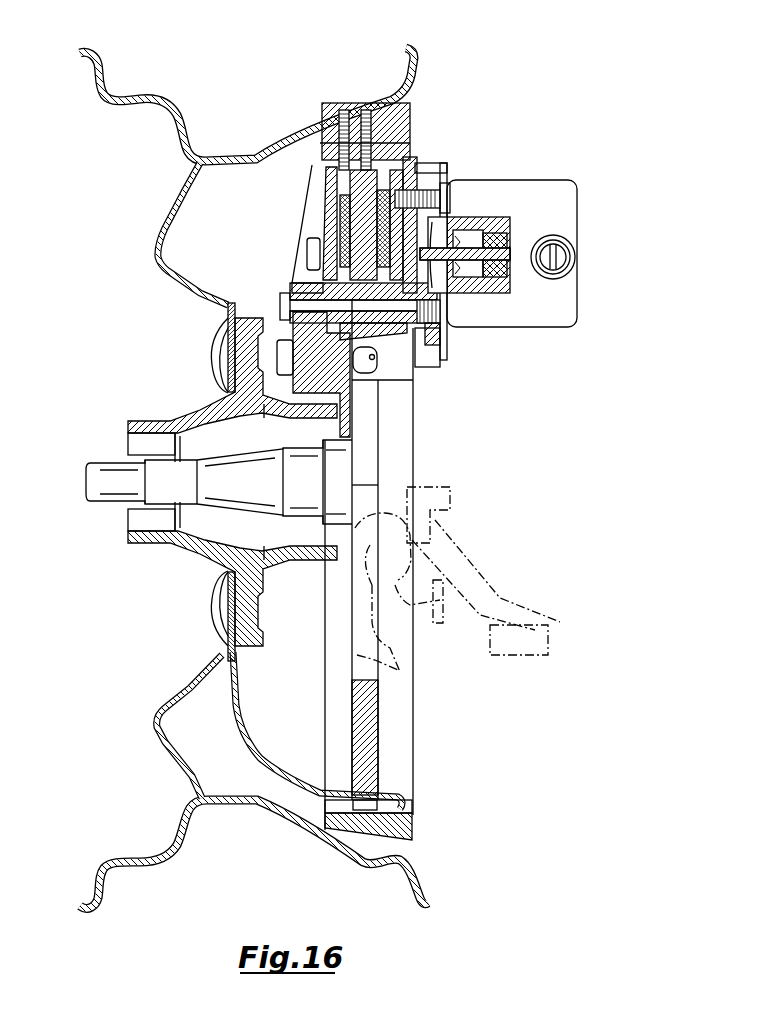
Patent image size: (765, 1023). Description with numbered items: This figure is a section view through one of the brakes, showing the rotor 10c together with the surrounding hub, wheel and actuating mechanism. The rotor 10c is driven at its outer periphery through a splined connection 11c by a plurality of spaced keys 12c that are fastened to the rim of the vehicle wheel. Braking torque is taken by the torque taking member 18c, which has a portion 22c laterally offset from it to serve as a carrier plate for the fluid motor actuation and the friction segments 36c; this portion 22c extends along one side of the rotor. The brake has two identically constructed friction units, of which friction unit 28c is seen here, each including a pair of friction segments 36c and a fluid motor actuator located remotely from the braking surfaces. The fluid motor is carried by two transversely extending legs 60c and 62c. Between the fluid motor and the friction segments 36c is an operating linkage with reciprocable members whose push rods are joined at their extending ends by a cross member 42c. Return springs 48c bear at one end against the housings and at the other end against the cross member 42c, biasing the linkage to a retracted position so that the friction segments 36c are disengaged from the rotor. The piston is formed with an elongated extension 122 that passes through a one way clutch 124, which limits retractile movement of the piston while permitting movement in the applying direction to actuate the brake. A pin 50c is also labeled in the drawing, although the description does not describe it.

The rotor 10c is at (282, 140).
The splined connection 11c is at (366, 808).
The spaced keys 12c is at (322, 150).
The torque taking member 18c is at (342, 382).
The portion of torque taking member (carrier plate) 22c is at (413, 333).
The friction unit 28c is at (307, 223).
The friction segments 36c is at (413, 157).
The cross member 42c is at (482, 238).
The return springs 48c is at (470, 232).
The pivot pin 50c is at (325, 208).
The transversely extending leg 60c is at (563, 190).
The transversely extending leg 62c is at (553, 313).
The elongated extension 122 is at (440, 252).
The one way clutch 124 is at (440, 305).